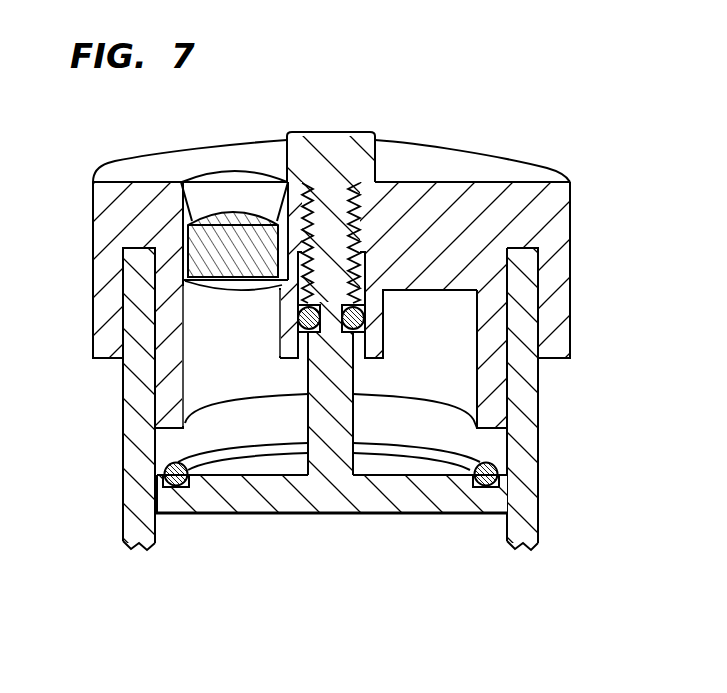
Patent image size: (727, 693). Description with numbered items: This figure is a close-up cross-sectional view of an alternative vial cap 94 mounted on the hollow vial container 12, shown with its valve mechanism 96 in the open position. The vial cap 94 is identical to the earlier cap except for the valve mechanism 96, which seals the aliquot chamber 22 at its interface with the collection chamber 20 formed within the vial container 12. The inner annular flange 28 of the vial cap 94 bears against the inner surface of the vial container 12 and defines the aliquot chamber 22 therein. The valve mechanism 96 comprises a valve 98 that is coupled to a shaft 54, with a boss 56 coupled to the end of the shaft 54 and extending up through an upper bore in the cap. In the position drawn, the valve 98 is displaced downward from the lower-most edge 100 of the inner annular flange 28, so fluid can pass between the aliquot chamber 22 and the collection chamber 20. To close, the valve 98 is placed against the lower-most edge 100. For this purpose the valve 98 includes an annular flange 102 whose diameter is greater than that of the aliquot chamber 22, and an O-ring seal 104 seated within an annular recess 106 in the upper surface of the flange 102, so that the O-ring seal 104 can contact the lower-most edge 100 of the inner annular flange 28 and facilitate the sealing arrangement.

The collection chamber 20 is at (290, 604).
The vial cap 94 is at (594, 110).
The boss 56 is at (365, 145).
The shaft 54 is at (345, 388).
The aliquot chamber 22 is at (196, 349).
The inner annular flange 28 is at (493, 407).
The vial container 12 is at (527, 514).
The lower-most edge 100 is at (168, 432).
The O-ring seal 104 is at (173, 486).
The annular recess 106 is at (186, 484).
The valve 98 is at (300, 505).
The valve mechanism 96 is at (336, 482).
The annular flange 102 is at (447, 495).